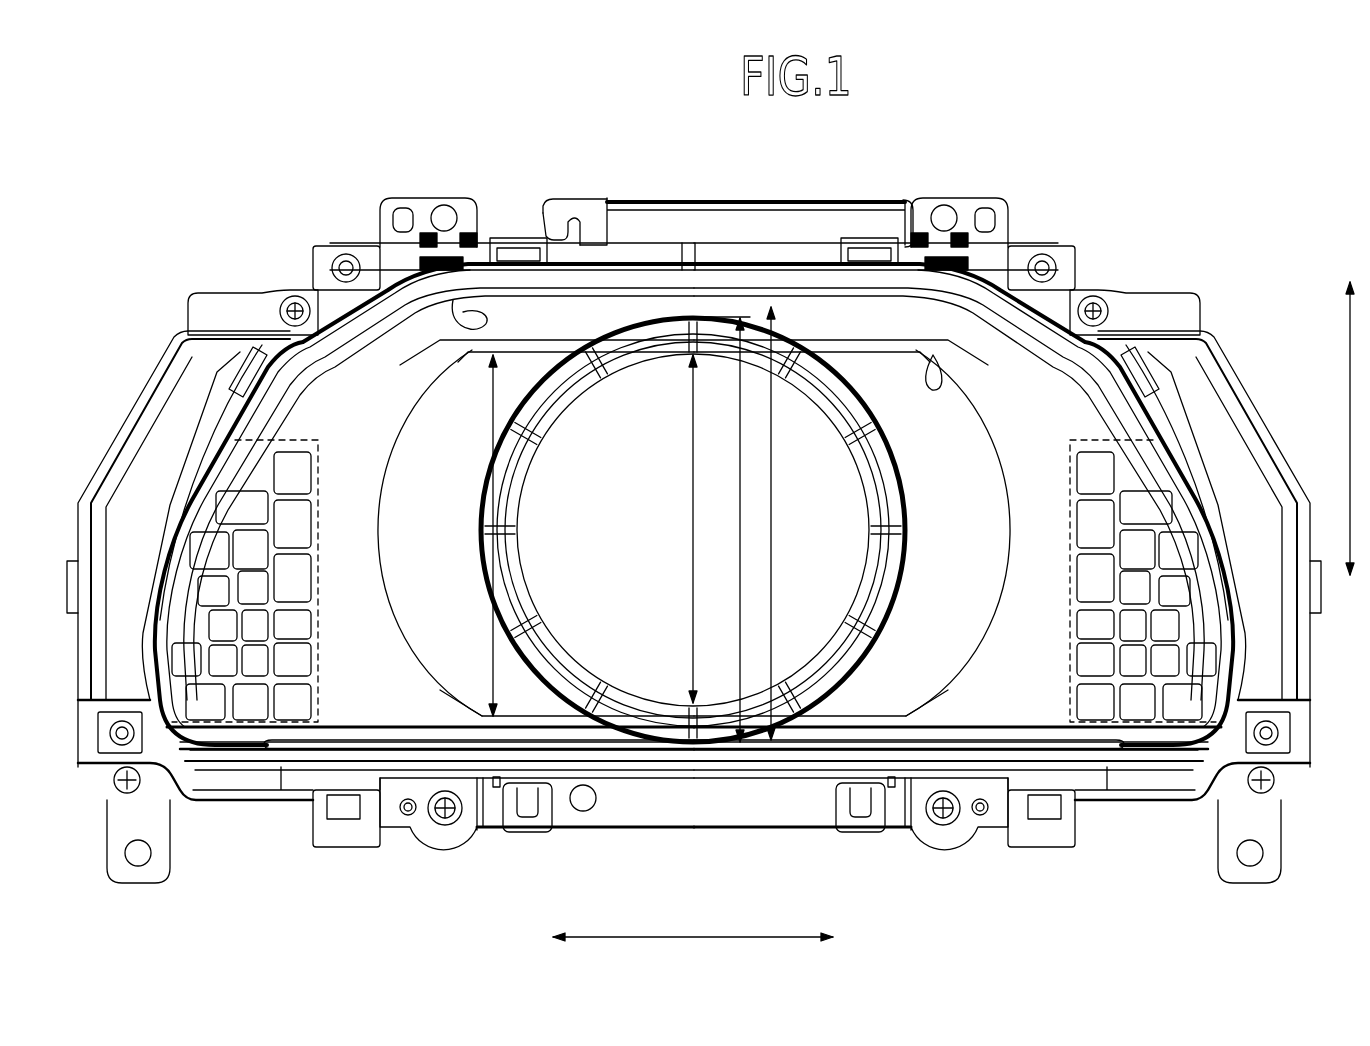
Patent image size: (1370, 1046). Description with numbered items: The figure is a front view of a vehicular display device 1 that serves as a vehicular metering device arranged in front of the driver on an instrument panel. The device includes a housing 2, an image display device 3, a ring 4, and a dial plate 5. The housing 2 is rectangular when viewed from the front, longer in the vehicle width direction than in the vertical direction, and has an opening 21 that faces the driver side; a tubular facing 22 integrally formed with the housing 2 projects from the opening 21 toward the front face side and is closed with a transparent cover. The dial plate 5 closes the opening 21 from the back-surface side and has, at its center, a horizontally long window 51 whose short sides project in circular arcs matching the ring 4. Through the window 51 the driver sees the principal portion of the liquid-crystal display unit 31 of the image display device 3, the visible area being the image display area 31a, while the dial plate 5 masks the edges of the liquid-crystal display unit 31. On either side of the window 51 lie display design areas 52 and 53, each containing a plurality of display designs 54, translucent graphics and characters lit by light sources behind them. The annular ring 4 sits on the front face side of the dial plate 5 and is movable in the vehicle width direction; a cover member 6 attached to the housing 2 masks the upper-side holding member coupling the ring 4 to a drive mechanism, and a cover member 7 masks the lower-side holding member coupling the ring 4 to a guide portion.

The vehicular display device 1 is at (316, 116).
The housing 2 is at (345, 242).
The image display device 3 is at (858, 372).
The liquid-crystal display unit 31 is at (693, 530).
The image display area 31a is at (835, 358).
The ring 4 is at (630, 318).
The dial plate 5 is at (1042, 378).
The cover member 6 is at (527, 320).
The cover member 7 is at (563, 733).
The opening 21 is at (453, 300).
The facing 22 is at (680, 300).
The window 51 is at (933, 355).
The display design area 52 is at (303, 441).
The display design area 53 is at (1084, 441).
The display designs 54 is at (209, 528).